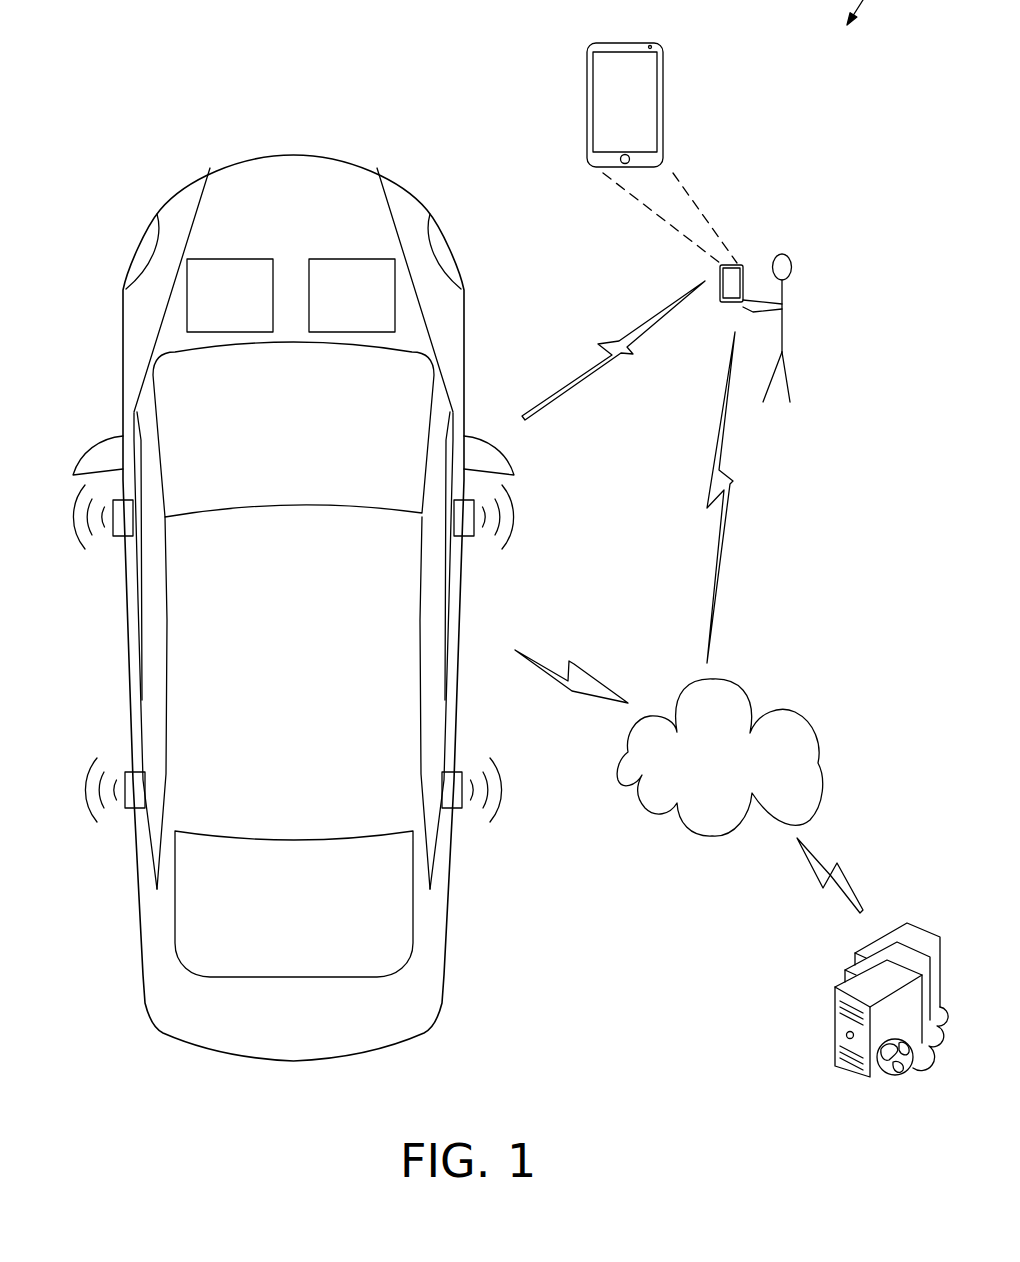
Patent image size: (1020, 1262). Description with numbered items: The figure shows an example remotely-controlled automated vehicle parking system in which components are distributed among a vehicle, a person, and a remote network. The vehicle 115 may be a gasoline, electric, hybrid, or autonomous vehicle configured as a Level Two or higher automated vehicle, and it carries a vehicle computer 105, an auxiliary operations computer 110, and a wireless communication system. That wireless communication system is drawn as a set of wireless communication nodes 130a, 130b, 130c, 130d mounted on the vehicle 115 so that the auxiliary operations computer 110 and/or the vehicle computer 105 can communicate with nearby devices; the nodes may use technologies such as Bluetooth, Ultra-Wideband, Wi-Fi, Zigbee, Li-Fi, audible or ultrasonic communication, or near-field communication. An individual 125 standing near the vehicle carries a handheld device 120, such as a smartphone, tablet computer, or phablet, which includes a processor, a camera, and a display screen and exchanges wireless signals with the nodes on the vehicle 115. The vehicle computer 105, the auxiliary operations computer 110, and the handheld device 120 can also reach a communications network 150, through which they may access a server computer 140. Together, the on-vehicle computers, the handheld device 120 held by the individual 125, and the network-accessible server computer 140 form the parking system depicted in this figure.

The vehicle computer 105 is at (230, 295).
The auxiliary operations computer 110 is at (352, 295).
The vehicle 115 is at (141, 189).
The handheld device 120 is at (663, 115).
The individual 125 is at (812, 286).
The wireless communication node 130a is at (115, 545).
The wireless communication node 130b is at (124, 812).
The wireless communication node 130c is at (472, 545).
The wireless communication node 130d is at (462, 812).
The server computer 140 is at (808, 1033).
The communications network 150 is at (720, 757).